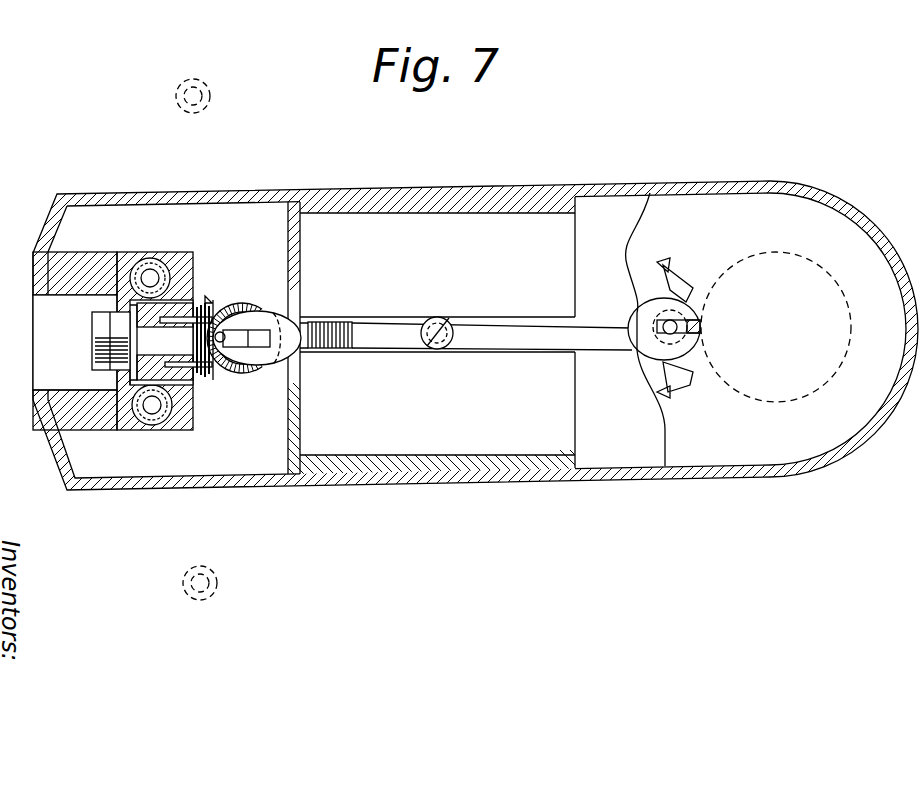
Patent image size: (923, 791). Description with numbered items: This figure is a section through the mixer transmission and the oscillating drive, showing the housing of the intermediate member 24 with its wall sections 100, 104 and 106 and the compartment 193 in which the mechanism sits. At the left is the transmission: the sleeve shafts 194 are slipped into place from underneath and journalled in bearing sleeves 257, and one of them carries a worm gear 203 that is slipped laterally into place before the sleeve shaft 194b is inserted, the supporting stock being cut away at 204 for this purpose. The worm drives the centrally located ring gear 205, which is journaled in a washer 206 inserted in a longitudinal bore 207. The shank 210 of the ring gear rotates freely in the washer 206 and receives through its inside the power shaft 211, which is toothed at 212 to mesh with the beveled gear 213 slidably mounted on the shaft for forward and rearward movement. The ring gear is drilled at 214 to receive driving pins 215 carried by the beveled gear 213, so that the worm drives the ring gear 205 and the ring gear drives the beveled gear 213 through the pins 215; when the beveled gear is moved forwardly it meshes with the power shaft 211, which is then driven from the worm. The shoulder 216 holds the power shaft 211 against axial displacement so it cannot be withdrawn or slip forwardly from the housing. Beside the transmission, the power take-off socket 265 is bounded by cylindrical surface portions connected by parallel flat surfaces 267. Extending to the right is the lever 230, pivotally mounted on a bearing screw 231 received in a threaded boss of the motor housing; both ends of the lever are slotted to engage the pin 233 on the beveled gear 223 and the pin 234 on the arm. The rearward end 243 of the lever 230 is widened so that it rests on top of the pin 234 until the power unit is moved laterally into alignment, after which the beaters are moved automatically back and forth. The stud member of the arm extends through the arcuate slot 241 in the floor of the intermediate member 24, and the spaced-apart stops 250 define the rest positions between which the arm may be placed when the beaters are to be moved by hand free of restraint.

The intermediate member 24 is at (845, 447).
The housing bottom wall section 100 is at (628, 478).
The compartment bottom wall 104 is at (448, 480).
The housing bottom wall section 106 is at (252, 486).
The compartment box 193 is at (302, 240).
The sleeve shaft 194 is at (170, 253).
The sleeve shaft 194b is at (113, 410).
The worm gear 203 is at (150, 428).
The cut-away 204 is at (172, 430).
The ring gear 205 is at (192, 285).
The washer 206 is at (193, 292).
The longitudinal bore 207 is at (190, 256).
The shank 210 is at (165, 360).
The power shaft 211 is at (92, 362).
The teeth 212 is at (161, 342).
The beveled gear 213 is at (207, 372).
The drilled holes 214 is at (198, 386).
The driving pins 215 is at (202, 382).
The shoulder 216 is at (130, 380).
The beveled gear 223 is at (277, 298).
The lever 230 is at (379, 313).
The bearing screw 231 is at (437, 315).
The pin 233 is at (232, 303).
The pin 234 is at (648, 328).
The arcuate slot 241 is at (690, 380).
The rearward end 243 is at (668, 325).
The stops 250 is at (670, 264).
The bearing sleeves 257 is at (130, 263).
The power take-off socket 265 is at (72, 347).
The flat surfaces 267 is at (75, 341).